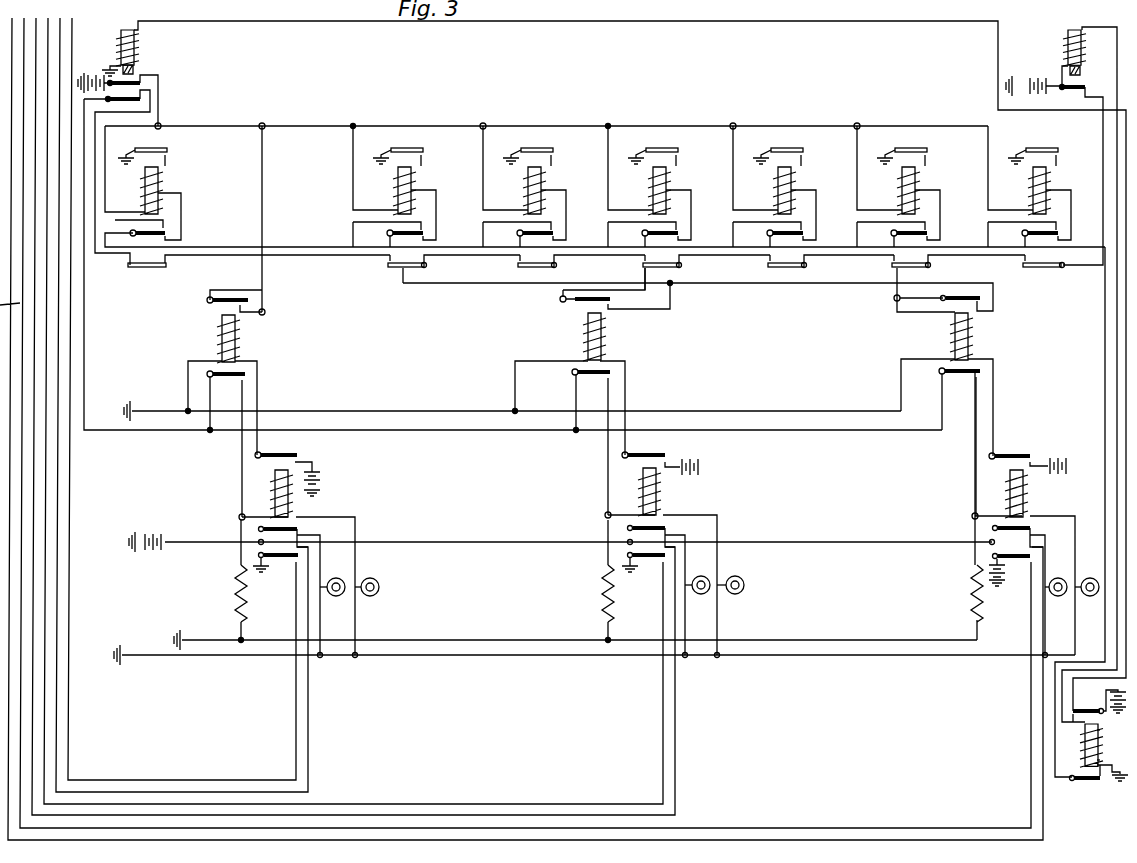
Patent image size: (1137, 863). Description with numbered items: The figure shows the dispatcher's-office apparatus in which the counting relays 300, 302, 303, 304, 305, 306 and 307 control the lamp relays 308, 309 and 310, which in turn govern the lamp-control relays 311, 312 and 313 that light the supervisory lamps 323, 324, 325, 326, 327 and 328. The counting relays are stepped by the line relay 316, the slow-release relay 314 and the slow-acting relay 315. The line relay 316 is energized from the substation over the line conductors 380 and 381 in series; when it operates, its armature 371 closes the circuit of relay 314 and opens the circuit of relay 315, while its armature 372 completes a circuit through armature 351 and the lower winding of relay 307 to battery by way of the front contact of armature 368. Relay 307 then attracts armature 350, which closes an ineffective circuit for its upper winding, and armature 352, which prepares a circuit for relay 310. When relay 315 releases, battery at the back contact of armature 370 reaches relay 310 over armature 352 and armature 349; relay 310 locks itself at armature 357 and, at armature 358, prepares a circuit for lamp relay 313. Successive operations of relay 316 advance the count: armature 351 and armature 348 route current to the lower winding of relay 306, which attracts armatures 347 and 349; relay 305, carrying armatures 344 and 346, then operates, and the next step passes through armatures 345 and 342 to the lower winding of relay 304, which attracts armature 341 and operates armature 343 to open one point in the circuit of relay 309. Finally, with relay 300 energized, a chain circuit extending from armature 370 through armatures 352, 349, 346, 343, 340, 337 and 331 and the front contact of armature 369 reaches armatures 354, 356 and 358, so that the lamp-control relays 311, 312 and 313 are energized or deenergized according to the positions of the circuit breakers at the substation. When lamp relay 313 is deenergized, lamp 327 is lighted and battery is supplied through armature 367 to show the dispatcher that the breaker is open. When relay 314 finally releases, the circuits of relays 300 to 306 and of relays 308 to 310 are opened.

The counting relay 300 is at (159, 187).
The counting relay 302 is at (412, 187).
The counting relay 303 is at (542, 187).
The counting relay 304 is at (667, 187).
The counting relay 305 is at (792, 187).
The counting relay 306 is at (916, 187).
The counting relay 307 is at (1047, 187).
The lamp relay 308 is at (236, 346).
The lamp relay 309 is at (601, 346).
The lamp relay 310 is at (968, 346).
The lamp-control relay 311 is at (275, 493).
The lamp-control relay 312 is at (656, 493).
The lamp-control relay 313 is at (1023, 493).
The slow-release relay 314 is at (135, 48).
The slow-acting relay 315 is at (1082, 60).
The line relay 316 is at (1085, 752).
The supervisory lamp 323 is at (342, 580).
The supervisory lamp 324 is at (385, 577).
The supervisory lamp 325 is at (707, 578).
The supervisory lamp 326 is at (750, 575).
The supervisory lamp 327 is at (1066, 580).
The supervisory lamp 328 is at (1104, 577).
The armature 331 is at (141, 268).
The armature 337 is at (424, 268).
The armature 340 is at (554, 268).
The armature 341 is at (652, 148).
The armature 342 is at (644, 237).
The armature 343 is at (679, 268).
The armature contact 344 is at (777, 148).
The armature 345 is at (769, 237).
The armature 346 is at (804, 268).
The armature 347 is at (901, 148).
The armature 348 is at (893, 237).
The armature 349 is at (928, 268).
The armature 350 is at (1034, 146).
The armature 351 is at (1025, 237).
The armature 352 is at (1043, 268).
The armature 354 is at (226, 444).
The armature 356 is at (591, 442).
The armature 357 is at (948, 302).
The armature 358 is at (959, 442).
The armature 367 is at (1005, 582).
The armature 368 is at (142, 80).
The armature 369 is at (142, 100).
The armature 370 is at (1085, 84).
The armature 371 is at (1086, 709).
The armature 372 is at (1090, 784).
The line conductor 380 is at (1100, 736).
The line conductor 381 is at (1118, 760).